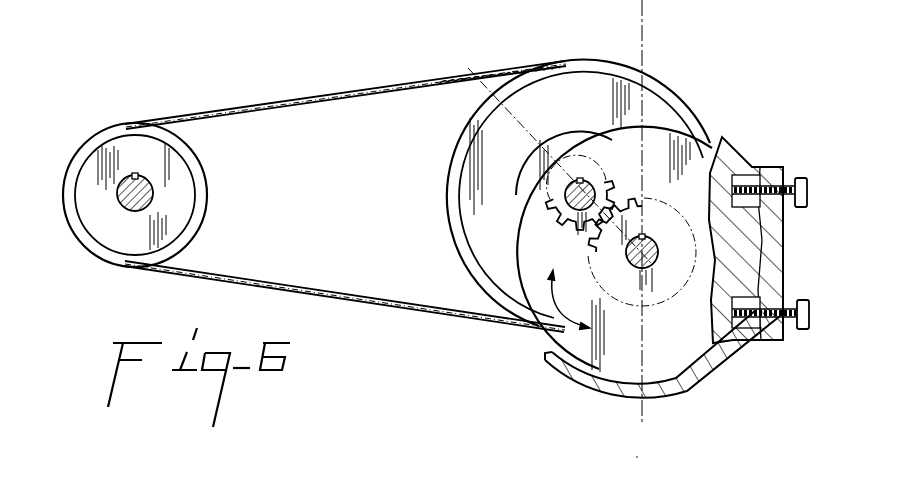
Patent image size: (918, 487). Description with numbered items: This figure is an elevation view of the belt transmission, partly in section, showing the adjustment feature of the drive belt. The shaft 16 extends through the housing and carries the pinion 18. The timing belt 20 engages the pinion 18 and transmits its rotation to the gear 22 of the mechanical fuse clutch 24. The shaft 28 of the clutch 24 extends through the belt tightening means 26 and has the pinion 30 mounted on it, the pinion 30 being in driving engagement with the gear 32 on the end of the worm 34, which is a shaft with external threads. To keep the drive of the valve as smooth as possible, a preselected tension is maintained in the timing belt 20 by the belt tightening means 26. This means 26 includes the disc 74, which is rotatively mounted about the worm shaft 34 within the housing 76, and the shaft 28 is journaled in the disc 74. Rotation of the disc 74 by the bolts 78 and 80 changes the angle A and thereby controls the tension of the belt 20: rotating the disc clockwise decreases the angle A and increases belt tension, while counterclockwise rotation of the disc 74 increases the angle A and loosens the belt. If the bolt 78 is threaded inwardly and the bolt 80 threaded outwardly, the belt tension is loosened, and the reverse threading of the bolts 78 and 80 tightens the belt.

The shaft 16 is at (125, 203).
The pinion 18 is at (118, 195).
The timing belt 20 is at (262, 110).
The gear 22 is at (462, 127).
The mechanical fuse clutch 24 is at (702, 91).
The belt tightening means 26 is at (610, 404).
The shaft 28 is at (566, 200).
The pinion 30 is at (585, 226).
The gear 32 is at (594, 242).
The worm 34 is at (630, 262).
The disc 74 is at (590, 368).
The housing 76 is at (728, 368).
The bolt 78 is at (800, 178).
The bolt 80 is at (800, 300).
The angle A is at (603, 0).